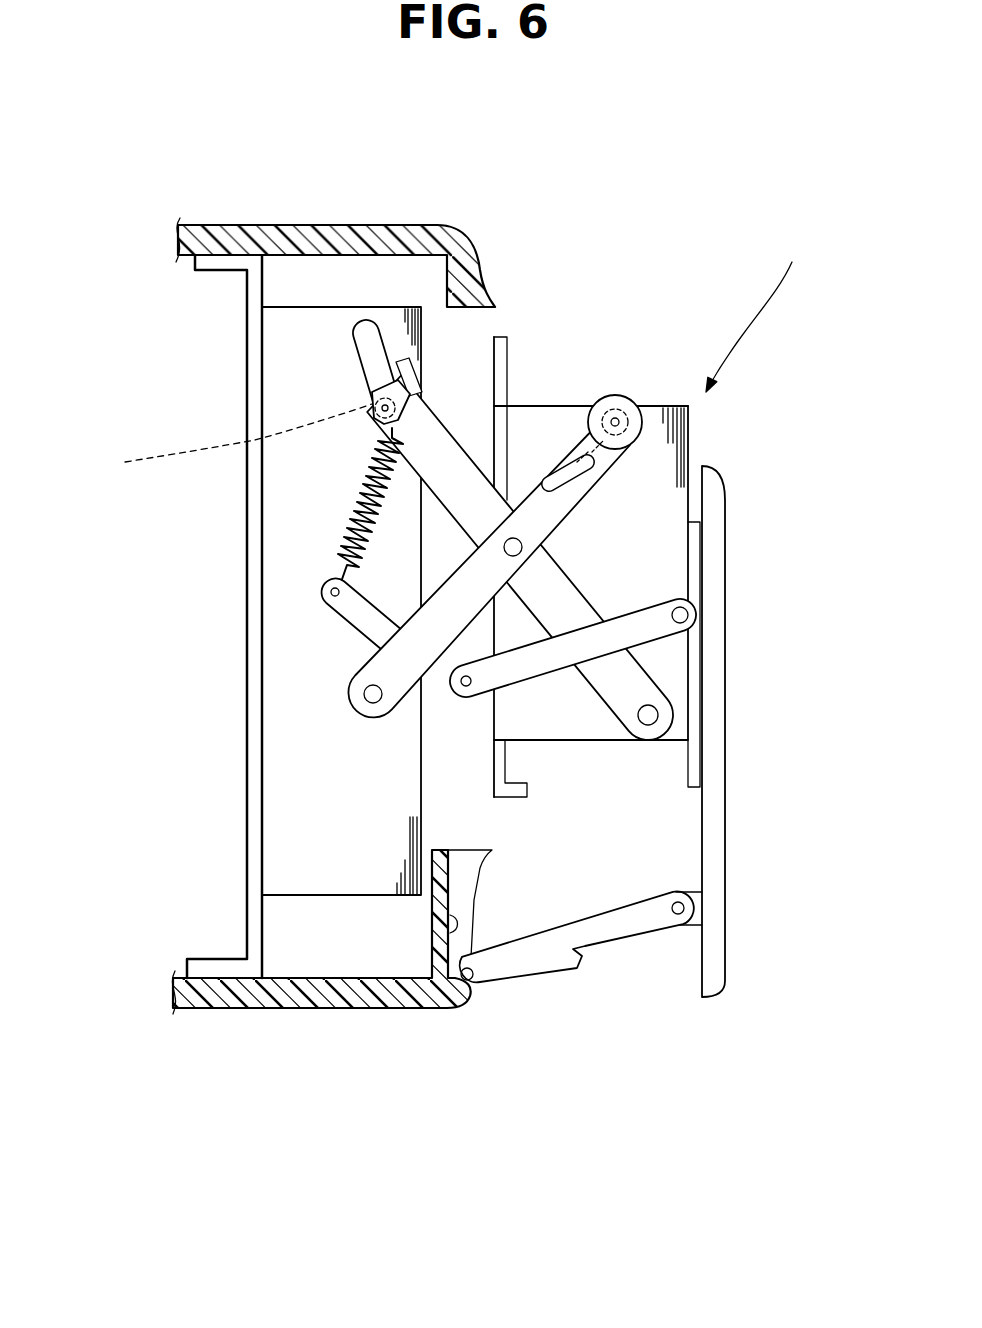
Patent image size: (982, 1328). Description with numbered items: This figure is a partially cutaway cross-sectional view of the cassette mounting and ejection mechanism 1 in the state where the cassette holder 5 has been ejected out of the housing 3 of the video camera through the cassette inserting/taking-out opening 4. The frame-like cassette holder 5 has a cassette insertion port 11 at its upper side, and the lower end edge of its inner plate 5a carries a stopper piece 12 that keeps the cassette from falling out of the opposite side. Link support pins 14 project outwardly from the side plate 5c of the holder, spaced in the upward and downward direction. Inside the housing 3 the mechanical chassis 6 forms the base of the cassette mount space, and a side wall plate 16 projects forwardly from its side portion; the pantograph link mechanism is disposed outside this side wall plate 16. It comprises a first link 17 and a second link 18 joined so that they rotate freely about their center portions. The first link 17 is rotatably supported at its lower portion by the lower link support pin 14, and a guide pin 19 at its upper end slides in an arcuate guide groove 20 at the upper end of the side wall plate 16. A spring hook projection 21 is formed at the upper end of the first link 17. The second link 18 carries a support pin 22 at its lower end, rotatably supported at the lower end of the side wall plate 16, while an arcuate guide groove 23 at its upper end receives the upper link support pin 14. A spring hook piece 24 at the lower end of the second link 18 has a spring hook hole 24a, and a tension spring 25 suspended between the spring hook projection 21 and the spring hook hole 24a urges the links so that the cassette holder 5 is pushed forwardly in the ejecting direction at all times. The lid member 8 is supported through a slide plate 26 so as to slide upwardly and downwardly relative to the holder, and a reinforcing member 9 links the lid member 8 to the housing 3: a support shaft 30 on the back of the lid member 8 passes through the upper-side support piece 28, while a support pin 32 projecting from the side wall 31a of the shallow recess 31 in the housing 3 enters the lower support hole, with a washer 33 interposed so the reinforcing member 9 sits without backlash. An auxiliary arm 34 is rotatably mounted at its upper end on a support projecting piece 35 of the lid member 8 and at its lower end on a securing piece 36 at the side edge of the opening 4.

The cassette mounting and ejection mechanism 1 is at (755, 310).
The housing 3 is at (357, 224).
The cassette inserting/taking-out opening 4 is at (485, 313).
The cassette holder 5 is at (667, 543).
The inner plate 5a is at (500, 372).
The side plate 5c is at (655, 467).
The mechanical chassis 6 is at (270, 296).
The lid member 8 is at (712, 705).
The reinforcing member 9 is at (563, 957).
The cassette insertion port 11 is at (656, 406).
The stopper piece 12 is at (518, 800).
The link support pin 14 is at (616, 405).
The side wall plate 16 is at (317, 883).
The first link 17 is at (622, 672).
The second link 18 is at (378, 672).
The guide pin 19 is at (226, 441).
The guide groove 20 is at (366, 360).
The spring hook projection 21 is at (375, 392).
The support pin 22 is at (362, 692).
The guide groove 23 is at (590, 455).
The spring hook piece 24 is at (375, 623).
The spring hook hole 24a is at (333, 585).
The tension spring 25 is at (350, 533).
The slide plate 26 is at (690, 763).
The upper-side support piece 28 is at (672, 890).
The support shaft 30 is at (697, 907).
The recess 31 is at (437, 942).
The side wall 31a is at (467, 890).
The support pin 32 is at (458, 935).
The washer 33 is at (485, 985).
The auxiliary arm 34 is at (547, 665).
The support projecting piece 35 is at (698, 603).
The securing piece 36 is at (455, 684).